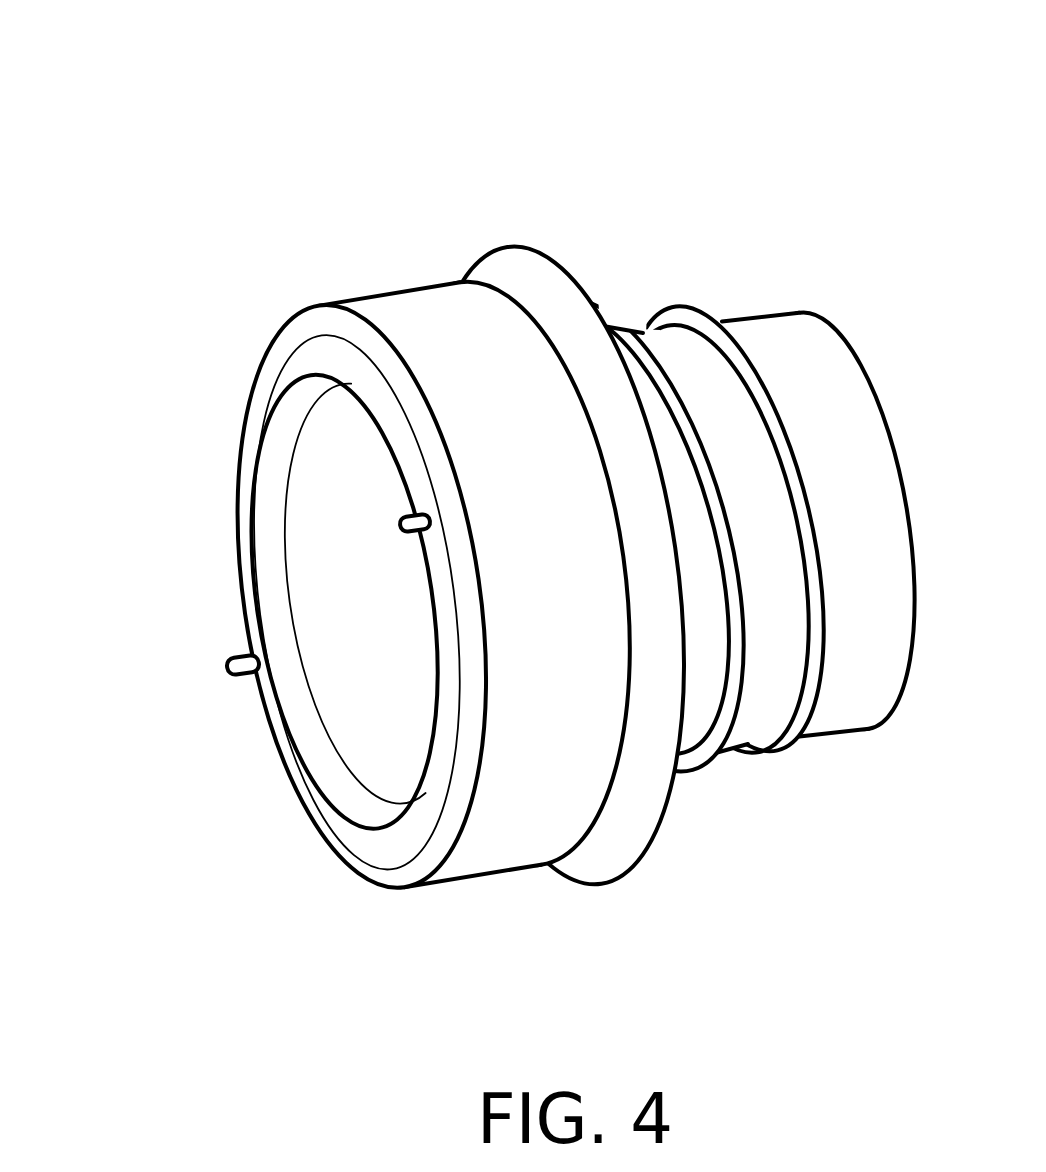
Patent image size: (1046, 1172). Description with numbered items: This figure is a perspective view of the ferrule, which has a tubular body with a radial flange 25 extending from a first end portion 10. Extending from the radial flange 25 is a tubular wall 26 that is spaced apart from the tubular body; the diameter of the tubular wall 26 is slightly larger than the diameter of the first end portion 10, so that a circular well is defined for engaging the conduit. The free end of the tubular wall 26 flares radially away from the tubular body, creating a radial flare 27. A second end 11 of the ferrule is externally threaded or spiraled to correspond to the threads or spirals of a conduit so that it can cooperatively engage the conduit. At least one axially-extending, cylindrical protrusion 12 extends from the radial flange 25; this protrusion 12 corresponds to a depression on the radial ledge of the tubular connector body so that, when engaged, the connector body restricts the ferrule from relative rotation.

The first end portion 10 is at (417, 292).
The second end 11 is at (771, 312).
The cylindrical protrusion 12 is at (400, 513).
The radial flange 25 is at (347, 802).
The tubular wall 26 is at (523, 842).
The radial flare 27 is at (522, 262).